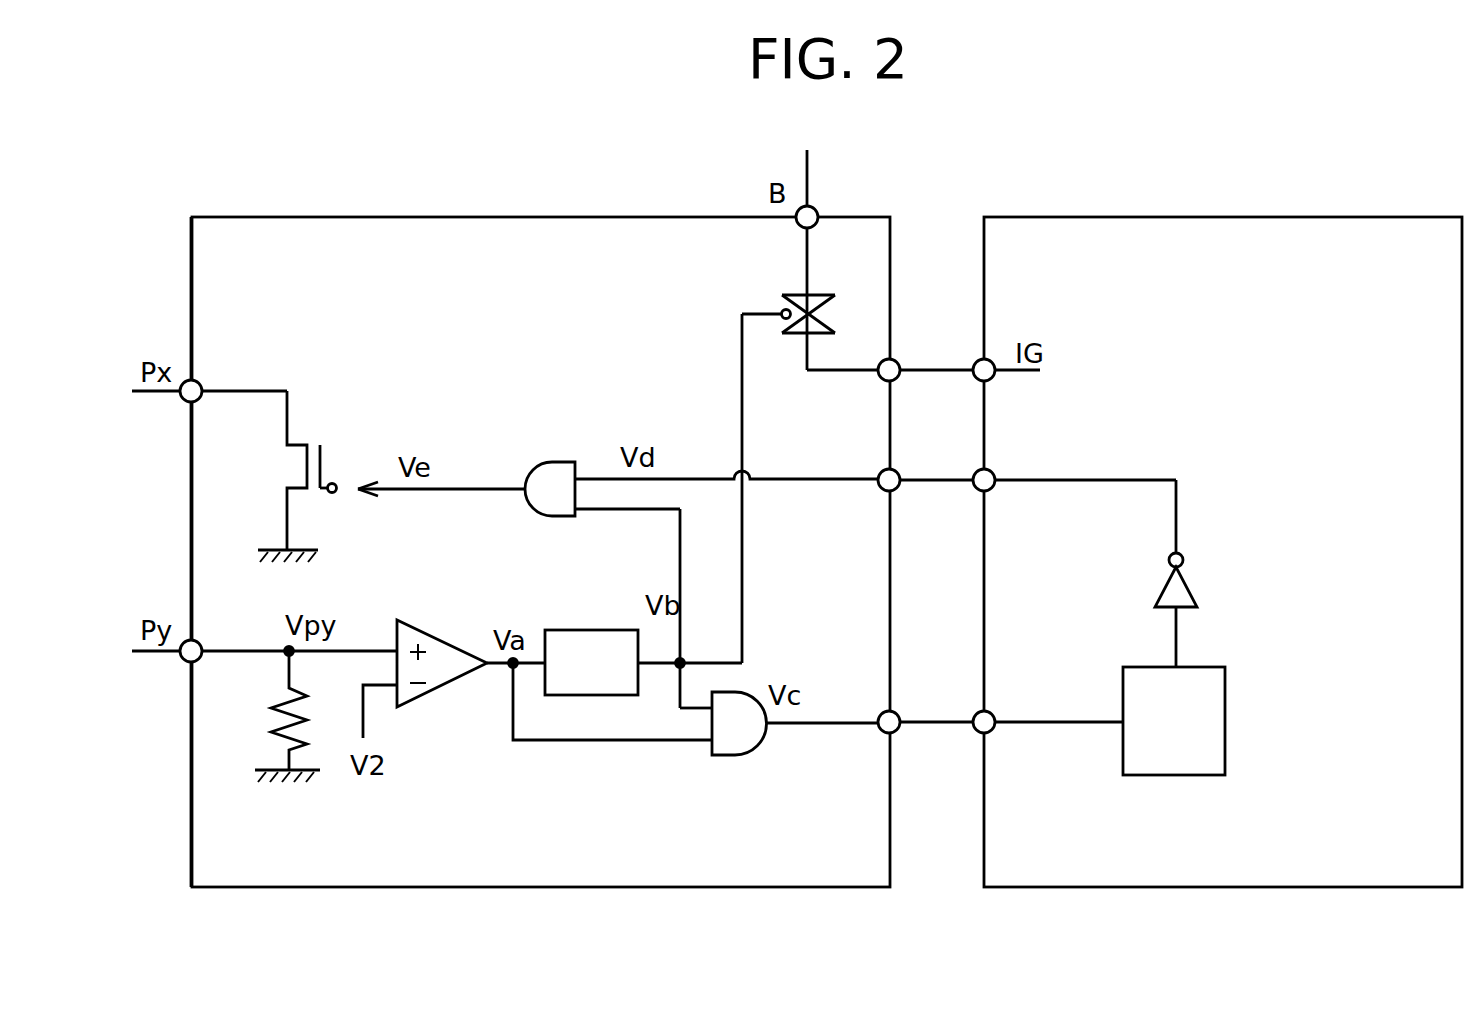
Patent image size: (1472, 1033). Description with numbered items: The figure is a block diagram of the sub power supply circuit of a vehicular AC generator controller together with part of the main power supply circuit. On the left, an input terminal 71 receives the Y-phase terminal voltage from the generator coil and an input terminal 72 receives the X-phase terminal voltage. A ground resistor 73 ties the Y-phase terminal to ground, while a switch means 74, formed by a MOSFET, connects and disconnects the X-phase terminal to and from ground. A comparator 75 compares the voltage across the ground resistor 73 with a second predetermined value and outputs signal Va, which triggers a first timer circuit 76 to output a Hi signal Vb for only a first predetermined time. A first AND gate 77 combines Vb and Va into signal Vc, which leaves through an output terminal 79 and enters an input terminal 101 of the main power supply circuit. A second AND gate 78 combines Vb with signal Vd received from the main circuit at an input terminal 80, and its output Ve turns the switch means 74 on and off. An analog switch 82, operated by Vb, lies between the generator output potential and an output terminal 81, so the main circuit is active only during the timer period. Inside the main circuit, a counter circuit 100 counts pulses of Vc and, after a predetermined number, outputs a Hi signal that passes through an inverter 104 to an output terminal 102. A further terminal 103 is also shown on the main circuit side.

The input terminal 71 is at (196, 643).
The input terminal 72 is at (198, 383).
The ground resistor 73 is at (298, 709).
The switch means 74 is at (288, 466).
The comparator 75 is at (441, 688).
The first timer circuit 76 is at (580, 630).
The first AND gate 77 is at (748, 756).
The second AND gate 78 is at (540, 462).
The output terminal 79 is at (881, 730).
The input terminal 80 is at (880, 488).
The output terminal 81 is at (882, 382).
The analog switch 82 is at (792, 293).
The counter circuit 100 is at (1167, 777).
The input terminal 101 is at (988, 730).
The output terminal 102 is at (991, 492).
The ignition terminal 103 is at (991, 382).
The inverter 104 is at (1190, 590).